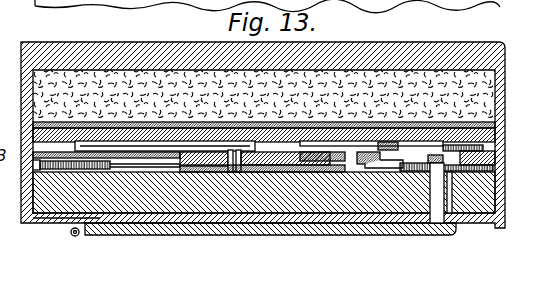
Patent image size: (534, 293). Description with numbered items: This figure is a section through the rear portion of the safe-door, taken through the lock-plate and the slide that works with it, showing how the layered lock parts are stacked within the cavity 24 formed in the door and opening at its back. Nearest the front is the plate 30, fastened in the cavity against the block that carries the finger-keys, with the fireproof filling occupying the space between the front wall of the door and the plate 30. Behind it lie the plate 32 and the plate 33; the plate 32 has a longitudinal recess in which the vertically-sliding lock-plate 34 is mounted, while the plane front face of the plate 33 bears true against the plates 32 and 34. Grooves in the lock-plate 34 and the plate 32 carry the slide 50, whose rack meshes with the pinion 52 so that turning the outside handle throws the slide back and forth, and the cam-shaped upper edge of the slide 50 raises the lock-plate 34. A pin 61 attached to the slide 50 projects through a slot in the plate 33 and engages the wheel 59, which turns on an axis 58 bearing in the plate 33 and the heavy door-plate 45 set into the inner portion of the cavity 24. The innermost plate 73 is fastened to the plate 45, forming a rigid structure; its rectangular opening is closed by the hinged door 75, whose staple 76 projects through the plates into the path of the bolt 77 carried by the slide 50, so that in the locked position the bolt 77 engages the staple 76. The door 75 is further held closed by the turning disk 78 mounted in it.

The cavity 24 is at (128, 62).
The lock-plate 34 is at (340, 100).
The plate 30 is at (497, 122).
The plate 32 is at (497, 140).
The pinion 52 is at (490, 150).
The door-plate 45 is at (63, 202).
The innermost plate 73 is at (70, 230).
The wheel 59 is at (127, 170).
The plate 33 is at (157, 172).
The center piece or disk 78 is at (183, 215).
The pin 61 is at (232, 172).
The slide 50 is at (276, 172).
The axes 58 is at (323, 213).
The bolt 77 is at (375, 172).
The staple 76 is at (440, 223).
The door 75 is at (460, 228).